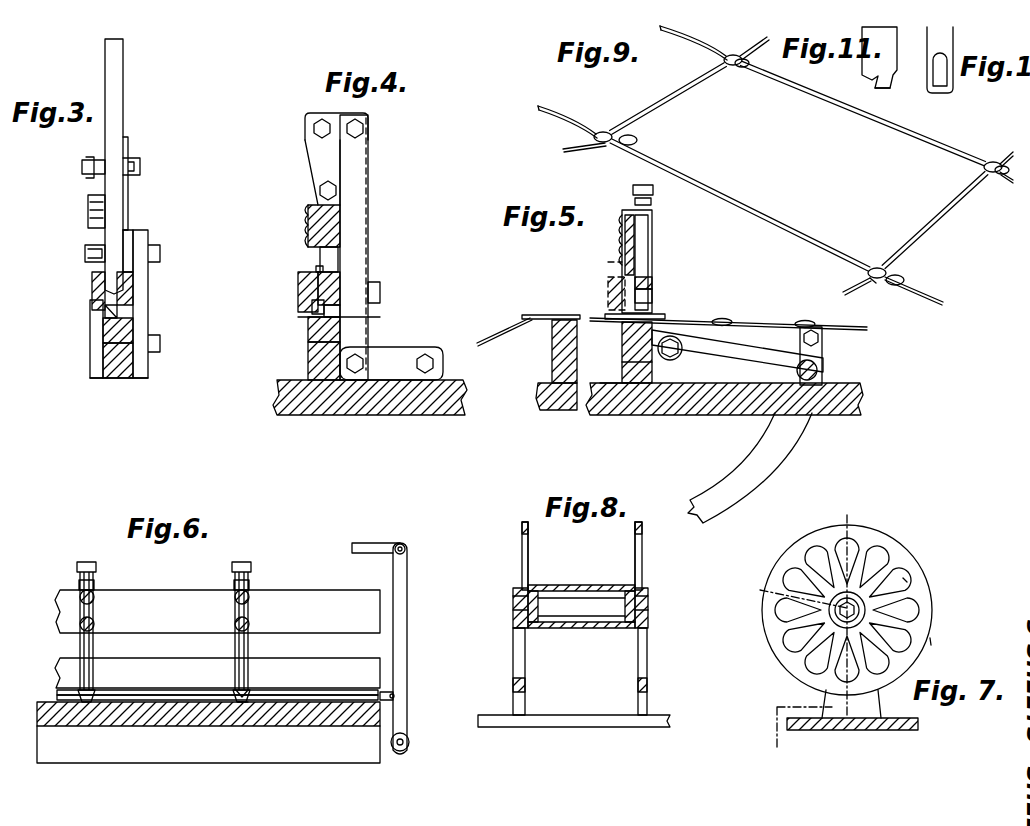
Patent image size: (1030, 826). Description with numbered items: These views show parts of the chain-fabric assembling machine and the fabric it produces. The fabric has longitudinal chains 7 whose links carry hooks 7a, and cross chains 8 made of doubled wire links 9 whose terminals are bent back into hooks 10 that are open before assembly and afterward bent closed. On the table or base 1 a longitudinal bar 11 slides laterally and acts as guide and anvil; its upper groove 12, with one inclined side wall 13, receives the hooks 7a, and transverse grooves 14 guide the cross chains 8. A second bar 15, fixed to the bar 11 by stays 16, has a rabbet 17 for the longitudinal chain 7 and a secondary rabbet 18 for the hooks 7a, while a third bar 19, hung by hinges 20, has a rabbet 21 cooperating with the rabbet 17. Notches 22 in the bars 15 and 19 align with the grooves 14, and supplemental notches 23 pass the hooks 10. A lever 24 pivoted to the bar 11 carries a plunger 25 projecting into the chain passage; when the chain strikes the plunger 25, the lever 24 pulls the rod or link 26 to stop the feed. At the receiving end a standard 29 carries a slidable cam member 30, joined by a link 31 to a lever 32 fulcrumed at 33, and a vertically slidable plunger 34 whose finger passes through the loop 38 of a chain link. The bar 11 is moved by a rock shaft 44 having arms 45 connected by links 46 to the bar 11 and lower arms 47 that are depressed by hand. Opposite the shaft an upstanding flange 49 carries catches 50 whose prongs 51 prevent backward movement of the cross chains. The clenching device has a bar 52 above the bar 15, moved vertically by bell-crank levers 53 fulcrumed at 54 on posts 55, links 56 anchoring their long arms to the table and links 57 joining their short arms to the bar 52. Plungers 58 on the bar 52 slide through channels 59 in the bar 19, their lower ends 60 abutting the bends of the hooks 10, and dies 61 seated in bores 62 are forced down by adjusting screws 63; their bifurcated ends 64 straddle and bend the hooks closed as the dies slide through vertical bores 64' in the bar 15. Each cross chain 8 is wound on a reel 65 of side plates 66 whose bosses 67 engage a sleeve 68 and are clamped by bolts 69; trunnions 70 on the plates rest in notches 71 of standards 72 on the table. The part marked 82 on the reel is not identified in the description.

In FIG. 4, the table or base 1 is at (345, 405).
In FIG. 5, the table or base 1 is at (632, 400).
In FIG. 9, the longitudinal chain 7 is at (765, 205).
In FIG. 9, the hook of longitudinal chain link 7a is at (640, 140).
In FIG. 5, the cross chain 8 is at (490, 335).
In FIG. 9, the cross chain 8 is at (690, 88).
In FIG. 7, the cross chain 8 is at (777, 760).
In FIG. 9, the doubled wire link 9 is at (677, 89).
In FIG. 5, the hook 10 is at (725, 320).
In FIG. 9, the hook 10 is at (600, 125).
In FIG. 3, the longitudinal bar 11 is at (120, 345).
In FIG. 4, the longitudinal bar 11 is at (315, 355).
In FIG. 5, the longitudinal bar 11 is at (640, 372).
In FIG. 6, the longitudinal bar 11 is at (380, 752).
In FIG. 3, the upper longitudinal groove 12 is at (108, 333).
In FIG. 4, the upper longitudinal groove 12 is at (315, 325).
In FIG. 9, the upper longitudinal groove 12 is at (880, 285).
In FIG. 3, the inclined side wall 13 is at (104, 318).
In FIG. 4, the inclined side wall 13 is at (318, 310).
In FIG. 5, the transverse groove 14 is at (682, 348).
In FIG. 6, the transverse groove 14 is at (90, 705).
In FIG. 3, the second longitudinal bar 15 is at (128, 288).
In FIG. 4, the second longitudinal bar 15 is at (335, 283).
In FIG. 5, the second longitudinal bar 15 is at (610, 295).
In FIG. 6, the second longitudinal bar 15 is at (137, 658).
In FIG. 3, the stay 16 is at (145, 328).
In FIG. 3, the longitudinal rabbet 17 is at (148, 302).
In FIG. 4, the longitudinal rabbet 17 is at (345, 312).
In FIG. 6, the longitudinal rabbet 17 is at (310, 692).
In FIG. 4, the secondary longitudinal rabbet 18 is at (345, 298).
In FIG. 5, the secondary longitudinal rabbet 18 is at (655, 316).
In FIG. 6, the secondary longitudinal rabbet 18 is at (320, 694).
In FIG. 3, the third bar 19 is at (95, 289).
In FIG. 4, the third bar 19 is at (308, 280).
In FIG. 4, the hinge 20 is at (318, 268).
In FIG. 4, the longitudinal rabbet 21 is at (312, 305).
In FIG. 6, the notch 22 is at (250, 697).
In FIG. 6, the supplemental notch 23 is at (240, 695).
In FIG. 6, the lever 24 is at (407, 641).
In FIG. 6, the plunger 25 is at (395, 694).
In FIG. 6, the rod or link 26 is at (367, 547).
In FIG. 3, the standard 29 is at (93, 372).
In FIG. 3, the cam member 30 is at (95, 225).
In FIG. 3, the link 31 is at (88, 187).
In FIG. 3, the lever 32 is at (112, 190).
In FIG. 3, the fulcrum 33 is at (92, 253).
In FIG. 3, the vertically slidable plunger 34 is at (125, 147).
In FIG. 9, the loop 38 is at (723, 45).
In FIG. 5, the rock shaft 44 is at (817, 370).
In FIG. 5, the arm 45 is at (823, 360).
In FIG. 5, the link 46 is at (735, 357).
In FIG. 5, the arm 47 is at (760, 478).
In FIG. 5, the upstanding longitudinal flange 49 is at (560, 358).
In FIG. 5, the catch 50 is at (557, 300).
In FIG. 5, the prong 51 is at (523, 318).
In FIG. 4, the longitudinal horizontal bar 52 is at (330, 225).
In FIG. 6, the longitudinal horizontal bar 52 is at (285, 600).
In FIG. 4, the bell-crank lever 53 is at (352, 178).
In FIG. 4, the fulcrum 54 is at (358, 130).
In FIG. 4, the standard or post 55 is at (372, 116).
In FIG. 4, the link 56 is at (410, 352).
In FIG. 4, the link 57 is at (318, 158).
In FIG. 4, the plunger 58 is at (306, 225).
In FIG. 5, the plunger 58 is at (620, 232).
In FIG. 11, the plunger 58 is at (865, 50).
In FIG. 5, the channel or recess 59 is at (622, 280).
In FIG. 5, the lower end of plunger 60 is at (628, 340).
In FIG. 11, the lower end of plunger 60 is at (883, 83).
In FIG. 4, the die 61 is at (335, 257).
In FIG. 5, the die 61 is at (642, 262).
In FIG. 10, the die 61 is at (929, 40).
In FIG. 5, the bore 62 is at (650, 225).
In FIG. 5, the adjusting screw 63 is at (635, 190).
In FIG. 5, the bifurcated lower end 64 is at (669, 295).
In FIG. 10, the bifurcated lower end 64 is at (945, 88).
In FIG. 5, the vertical bore 64' is at (685, 272).
In FIG. 8, the reel 65 is at (518, 585).
In FIG. 7, the reel 65 is at (895, 533).
In FIG. 8, the side plate 66 is at (522, 528).
In FIG. 7, the side plate 66 is at (922, 642).
In FIG. 8, the hub or boss 67 is at (540, 612).
In FIG. 8, the sleeve 68 is at (565, 593).
In FIG. 8, the bolt 69 is at (590, 617).
In FIG. 8, the trunnion 70 is at (513, 620).
In FIG. 7, the trunnion 70 is at (865, 603).
In FIG. 8, the notch 71 is at (513, 603).
In FIG. 7, the notch 71 is at (838, 603).
In FIG. 8, the standard 72 is at (513, 688).
In FIG. 7, the standard 72 is at (862, 708).
In FIG. 8, the slot 82 is at (530, 560).
In FIG. 7, the slot 82 is at (905, 580).